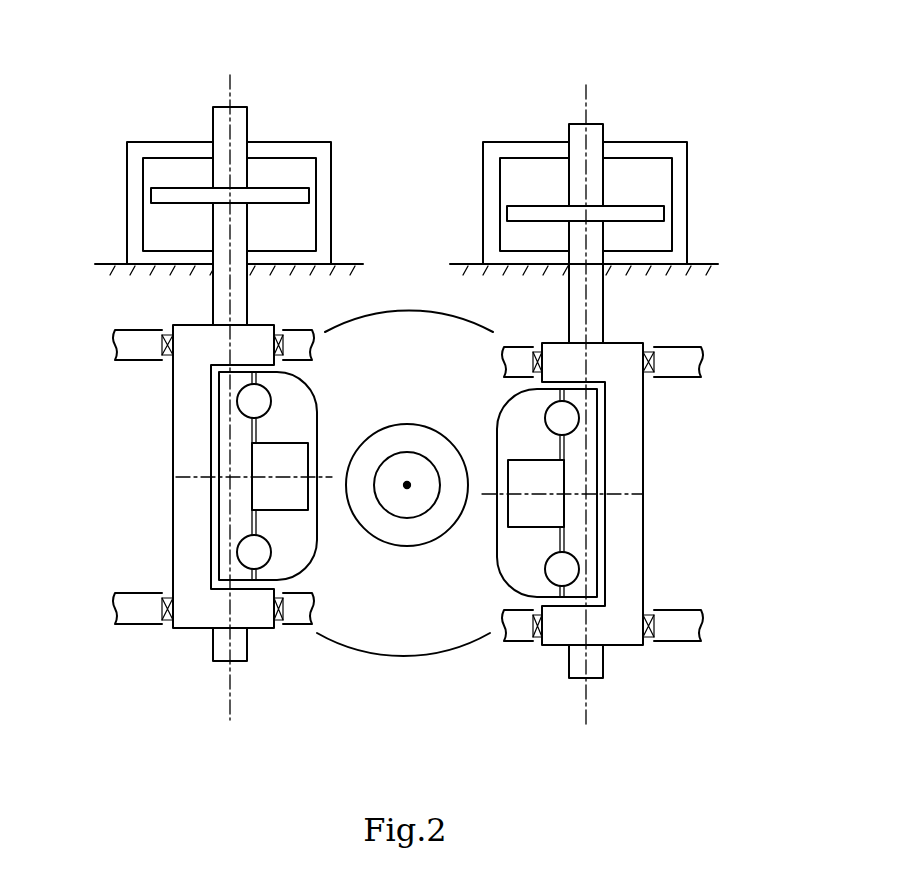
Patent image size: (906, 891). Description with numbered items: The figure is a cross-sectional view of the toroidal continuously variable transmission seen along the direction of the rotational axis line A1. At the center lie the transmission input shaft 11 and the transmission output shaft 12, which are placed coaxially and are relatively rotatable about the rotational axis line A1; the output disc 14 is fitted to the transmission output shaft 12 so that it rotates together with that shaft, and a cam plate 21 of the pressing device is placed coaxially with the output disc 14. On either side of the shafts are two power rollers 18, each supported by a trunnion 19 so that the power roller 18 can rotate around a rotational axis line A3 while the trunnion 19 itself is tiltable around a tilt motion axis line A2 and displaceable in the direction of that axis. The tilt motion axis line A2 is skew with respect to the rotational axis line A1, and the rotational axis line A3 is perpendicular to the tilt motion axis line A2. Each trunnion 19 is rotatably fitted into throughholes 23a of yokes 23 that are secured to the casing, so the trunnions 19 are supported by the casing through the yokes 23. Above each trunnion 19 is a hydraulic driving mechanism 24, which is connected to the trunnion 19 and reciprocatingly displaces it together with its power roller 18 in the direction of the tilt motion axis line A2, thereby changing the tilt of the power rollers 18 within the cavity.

The transmission input shaft 11 is at (382, 428).
The transmission output shaft 12 is at (420, 452).
The output disc 14 is at (418, 325).
The power roller 18 is at (315, 543).
The trunnion 19 is at (171, 495).
The cam plate 21 is at (560, 303).
The yoke 23 is at (130, 627).
The throughhole 23a is at (167, 627).
The hydraulic driving mechanism 24 is at (313, 128).
The rotational axis line A1 is at (407, 485).
The tilt motion axis line A2 is at (230, 697).
The rotational axis line A3 is at (180, 474).